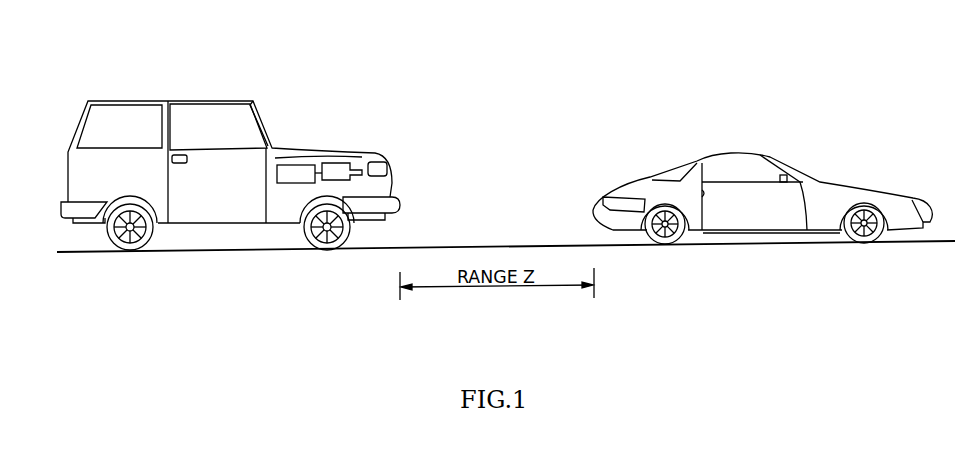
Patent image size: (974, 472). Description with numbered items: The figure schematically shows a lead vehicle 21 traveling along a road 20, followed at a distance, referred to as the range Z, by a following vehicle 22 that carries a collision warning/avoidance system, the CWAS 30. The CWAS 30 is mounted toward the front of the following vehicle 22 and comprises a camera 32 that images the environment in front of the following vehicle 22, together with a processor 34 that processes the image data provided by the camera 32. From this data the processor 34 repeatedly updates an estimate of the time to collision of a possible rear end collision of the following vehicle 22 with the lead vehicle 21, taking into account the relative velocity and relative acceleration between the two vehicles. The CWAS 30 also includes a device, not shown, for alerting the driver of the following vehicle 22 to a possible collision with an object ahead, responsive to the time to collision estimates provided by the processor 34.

The road 20 is at (368, 250).
The lead vehicle 21 is at (829, 122).
The following vehicle 22 is at (294, 61).
The collision warning/avoidance system (CWAS) 30 is at (321, 143).
The camera 32 is at (343, 182).
The processor 34 is at (293, 180).